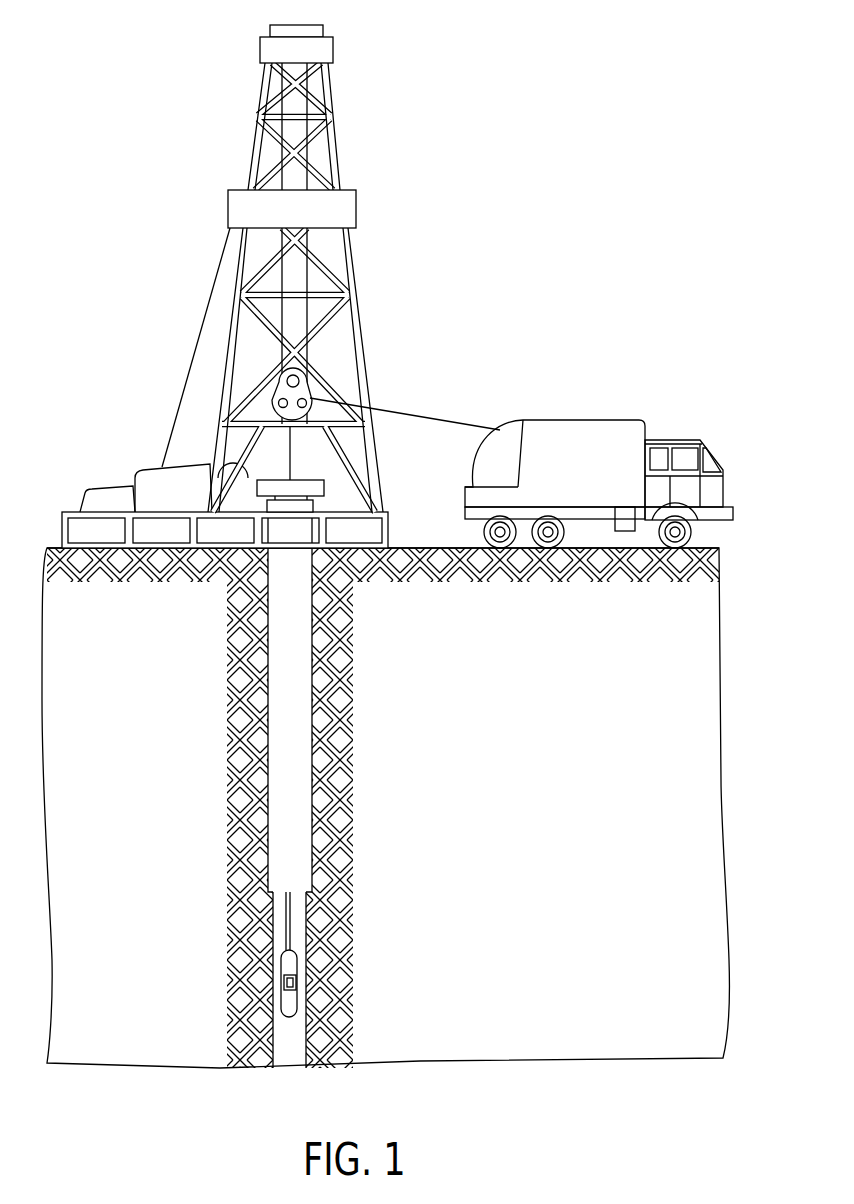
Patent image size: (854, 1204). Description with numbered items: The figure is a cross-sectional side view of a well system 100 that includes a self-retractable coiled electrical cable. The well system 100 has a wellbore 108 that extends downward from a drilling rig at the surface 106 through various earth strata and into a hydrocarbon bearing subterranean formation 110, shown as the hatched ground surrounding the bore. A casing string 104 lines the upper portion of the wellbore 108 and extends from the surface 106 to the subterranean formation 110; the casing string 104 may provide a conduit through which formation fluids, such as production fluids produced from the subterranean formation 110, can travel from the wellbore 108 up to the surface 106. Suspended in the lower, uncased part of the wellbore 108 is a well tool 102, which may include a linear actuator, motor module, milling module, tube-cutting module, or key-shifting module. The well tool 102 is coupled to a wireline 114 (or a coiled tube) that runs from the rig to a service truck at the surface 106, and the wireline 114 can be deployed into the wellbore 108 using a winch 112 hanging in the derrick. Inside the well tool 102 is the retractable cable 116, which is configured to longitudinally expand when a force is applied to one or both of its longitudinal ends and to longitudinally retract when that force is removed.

The well system 100 is at (519, 161).
The well tool 102 is at (298, 957).
The casing string 104 is at (268, 805).
The surface 106 is at (324, 482).
The wellbore 108 is at (303, 803).
The subterranean formation 110 is at (390, 692).
The winch 112 is at (300, 375).
The wireline 114 is at (424, 417).
The retractable cable 116 is at (298, 980).